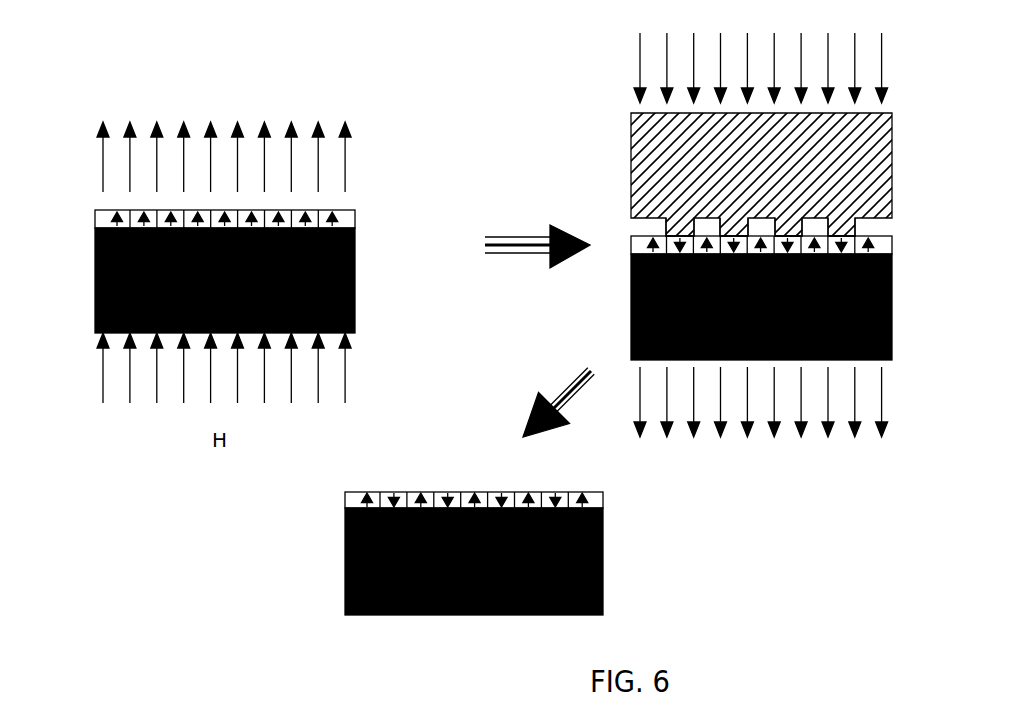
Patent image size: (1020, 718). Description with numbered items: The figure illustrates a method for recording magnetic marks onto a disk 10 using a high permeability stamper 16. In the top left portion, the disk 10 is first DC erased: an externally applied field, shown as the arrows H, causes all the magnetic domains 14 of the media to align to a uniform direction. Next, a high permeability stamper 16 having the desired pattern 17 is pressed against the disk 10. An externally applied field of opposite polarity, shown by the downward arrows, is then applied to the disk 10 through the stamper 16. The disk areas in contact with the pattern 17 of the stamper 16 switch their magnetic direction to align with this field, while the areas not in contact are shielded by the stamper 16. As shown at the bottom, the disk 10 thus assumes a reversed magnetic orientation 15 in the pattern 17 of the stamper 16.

The disk 10 is at (95, 329).
The magnetic domains 14 is at (356, 212).
The reversed magnetic orientation 15 is at (631, 245).
The high permeability stamper 16 is at (631, 152).
The pattern 17 is at (637, 227).